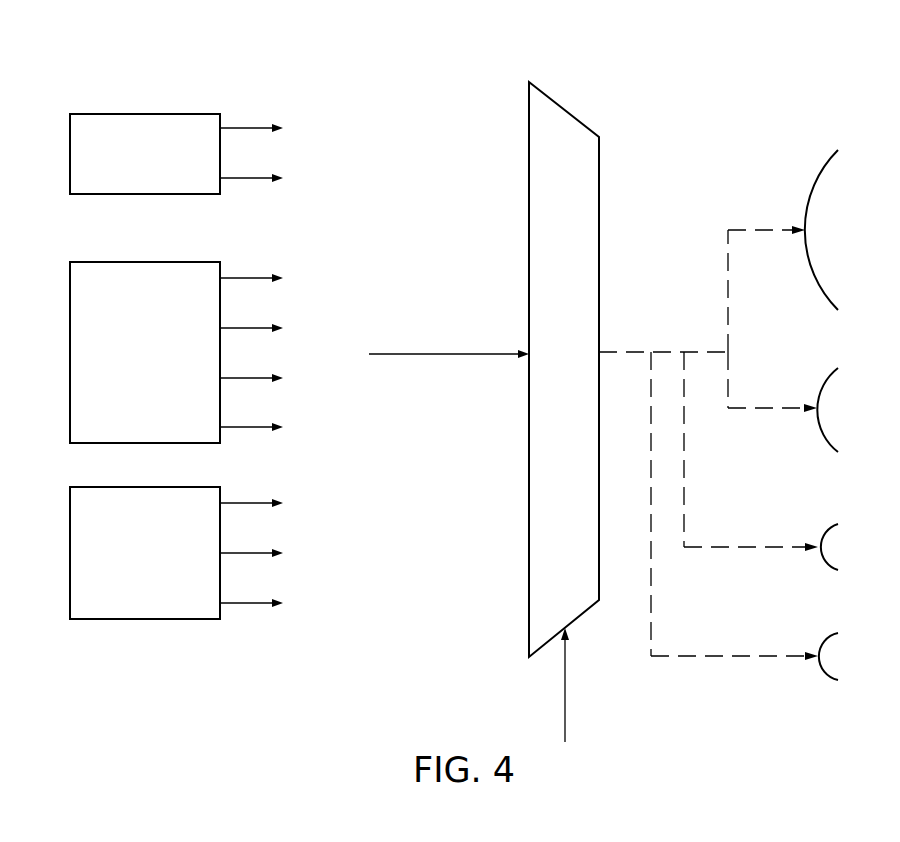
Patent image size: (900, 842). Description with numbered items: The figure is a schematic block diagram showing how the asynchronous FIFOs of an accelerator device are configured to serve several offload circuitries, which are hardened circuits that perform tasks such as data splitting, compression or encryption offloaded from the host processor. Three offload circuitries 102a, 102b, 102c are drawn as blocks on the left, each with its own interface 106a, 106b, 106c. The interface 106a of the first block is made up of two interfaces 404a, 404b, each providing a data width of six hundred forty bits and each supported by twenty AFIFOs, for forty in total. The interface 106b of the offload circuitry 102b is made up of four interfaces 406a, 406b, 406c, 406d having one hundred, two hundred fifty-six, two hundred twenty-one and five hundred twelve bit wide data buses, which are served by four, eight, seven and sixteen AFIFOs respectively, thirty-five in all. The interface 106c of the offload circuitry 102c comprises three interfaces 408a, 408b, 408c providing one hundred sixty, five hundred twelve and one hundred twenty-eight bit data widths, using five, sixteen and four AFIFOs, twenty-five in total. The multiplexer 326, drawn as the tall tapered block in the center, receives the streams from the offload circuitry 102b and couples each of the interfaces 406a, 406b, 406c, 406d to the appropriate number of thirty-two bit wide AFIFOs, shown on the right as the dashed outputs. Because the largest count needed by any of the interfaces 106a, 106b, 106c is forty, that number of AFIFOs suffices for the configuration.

The offload circuitry 102a is at (175, 169).
The offload circuitry 102b is at (175, 368).
The offload circuitry 102c is at (175, 568).
The interface 106a is at (298, 106).
The interface 106b is at (299, 258).
The interface 106c is at (298, 622).
The multiplexer 326 is at (566, 108).
The interface 404a is at (368, 128).
The interface 404b is at (368, 178).
The interface 406a is at (368, 278).
The interface 406b is at (368, 328).
The interface 406c is at (368, 378).
The interface 406d is at (368, 427).
The interface 408a is at (368, 503).
The interface 408b is at (368, 553).
The interface 408c is at (368, 603).